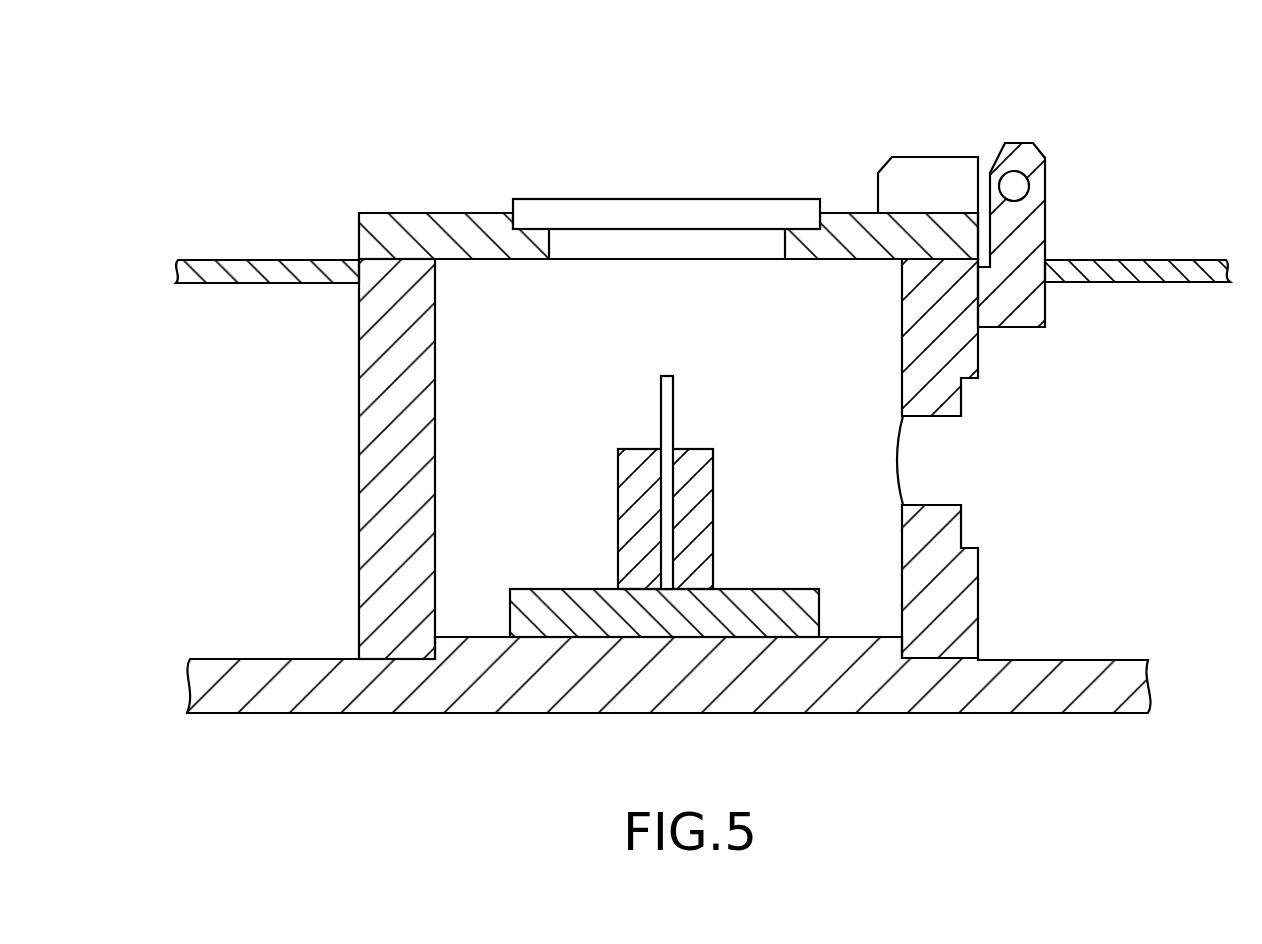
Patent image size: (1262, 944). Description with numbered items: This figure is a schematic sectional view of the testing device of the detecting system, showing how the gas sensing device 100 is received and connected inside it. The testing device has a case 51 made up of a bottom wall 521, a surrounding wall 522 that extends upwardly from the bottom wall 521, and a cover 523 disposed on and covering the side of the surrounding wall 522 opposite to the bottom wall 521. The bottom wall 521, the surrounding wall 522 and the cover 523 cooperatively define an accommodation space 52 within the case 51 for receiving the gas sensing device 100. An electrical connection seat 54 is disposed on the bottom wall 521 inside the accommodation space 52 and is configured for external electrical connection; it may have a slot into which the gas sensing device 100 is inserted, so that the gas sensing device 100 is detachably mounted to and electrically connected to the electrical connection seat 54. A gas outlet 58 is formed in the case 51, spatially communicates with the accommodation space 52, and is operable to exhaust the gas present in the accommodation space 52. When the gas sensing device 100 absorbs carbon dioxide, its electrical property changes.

The case 51 is at (264, 271).
The accommodation space 52 is at (827, 525).
The bottom wall 521 is at (485, 696).
The surrounding wall 522 is at (385, 375).
The cover 523 is at (728, 223).
The electrical connection seat 54 is at (635, 527).
The gas outlet 58 is at (937, 461).
The gas sensing device 100 is at (660, 412).